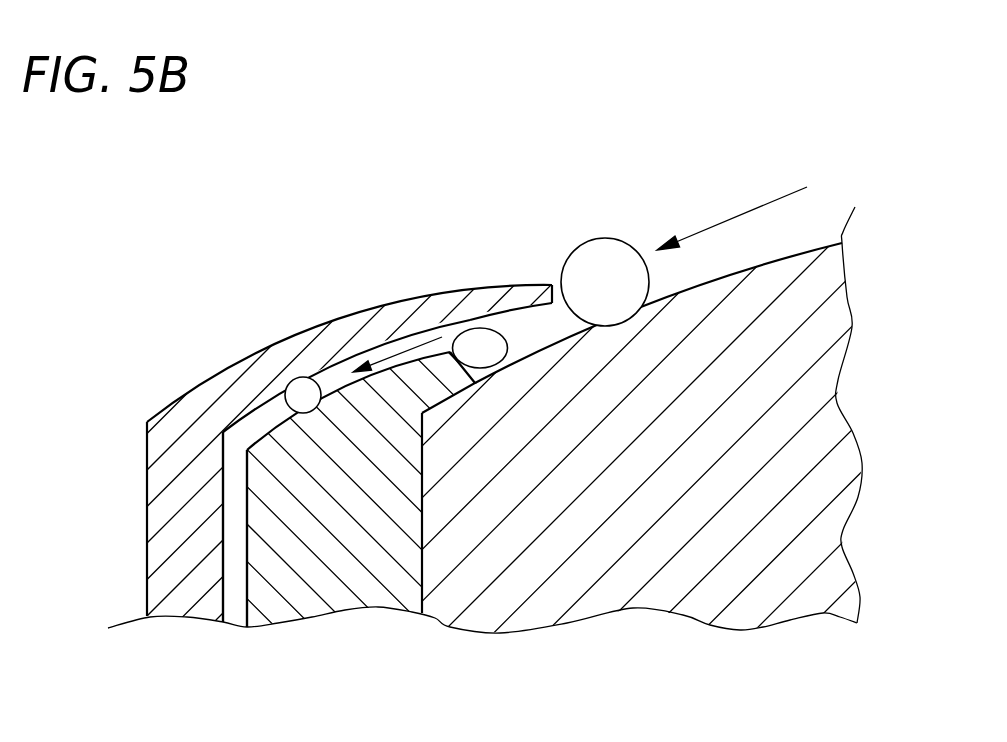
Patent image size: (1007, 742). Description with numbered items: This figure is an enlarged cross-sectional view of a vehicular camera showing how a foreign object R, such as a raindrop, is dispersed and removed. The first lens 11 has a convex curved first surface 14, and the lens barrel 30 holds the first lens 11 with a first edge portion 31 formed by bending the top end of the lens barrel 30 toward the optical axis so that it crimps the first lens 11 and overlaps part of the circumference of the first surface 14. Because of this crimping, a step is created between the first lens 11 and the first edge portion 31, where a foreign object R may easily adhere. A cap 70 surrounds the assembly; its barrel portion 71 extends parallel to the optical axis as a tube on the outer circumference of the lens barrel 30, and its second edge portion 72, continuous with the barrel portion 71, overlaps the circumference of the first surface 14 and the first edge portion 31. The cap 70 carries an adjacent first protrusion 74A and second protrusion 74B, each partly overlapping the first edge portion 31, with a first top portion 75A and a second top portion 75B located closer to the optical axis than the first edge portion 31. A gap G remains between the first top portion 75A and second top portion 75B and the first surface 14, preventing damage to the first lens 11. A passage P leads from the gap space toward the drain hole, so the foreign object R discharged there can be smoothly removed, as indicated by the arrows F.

The first lens 11 is at (592, 383).
The first surface 14 is at (813, 260).
The lens barrel 30 is at (368, 522).
The first edge portion 31 is at (390, 395).
The cap 70 is at (296, 394).
The barrel portion 71 is at (147, 597).
The second edge portion 72 is at (326, 292).
The first protrusion 74A is at (349, 295).
The second protrusion 74B is at (340, 308).
The first top portion 75A is at (531, 233).
The second top portion 75B is at (547, 328).
The passage P is at (237, 498).
The foreign object R is at (627, 240).
The gap G is at (520, 345).
The arrows F is at (407, 352).